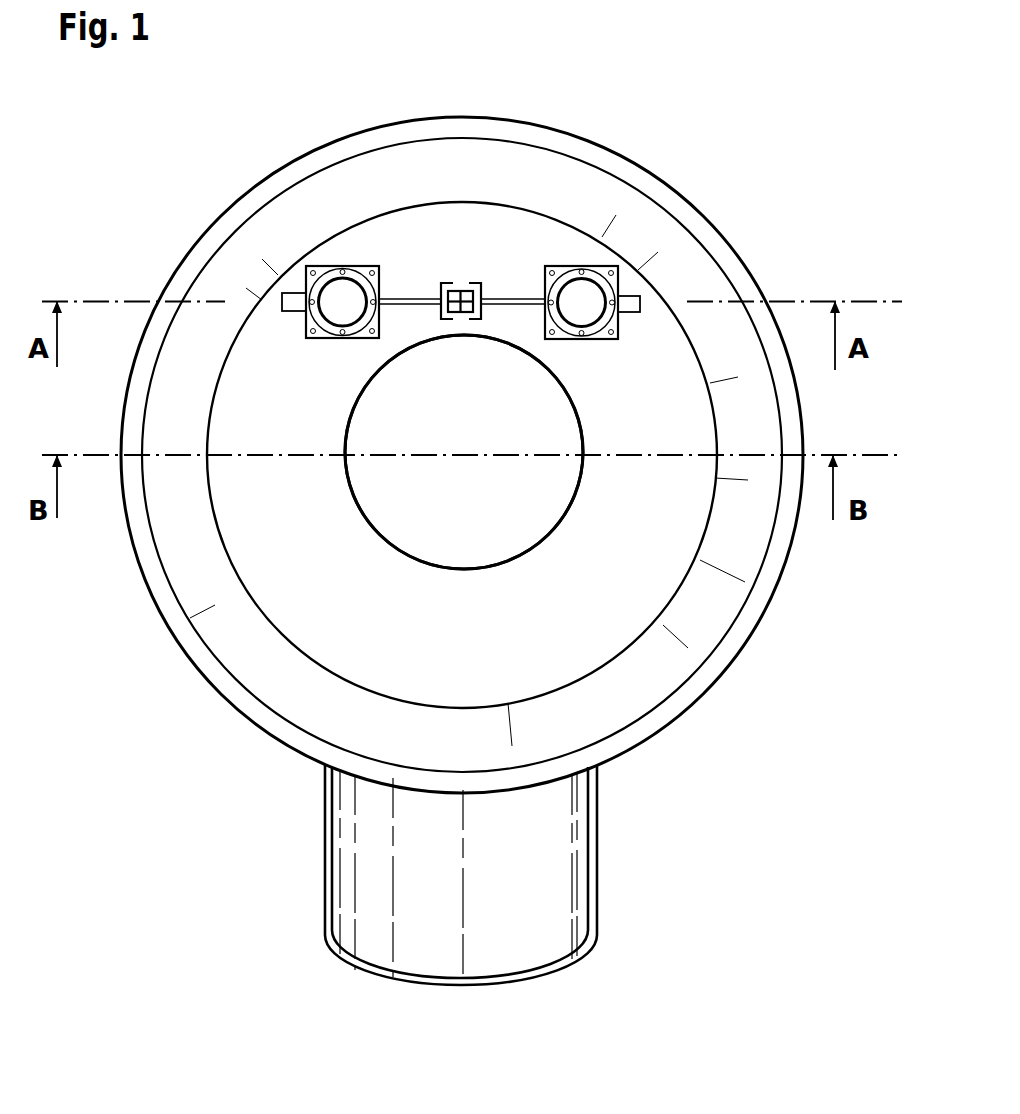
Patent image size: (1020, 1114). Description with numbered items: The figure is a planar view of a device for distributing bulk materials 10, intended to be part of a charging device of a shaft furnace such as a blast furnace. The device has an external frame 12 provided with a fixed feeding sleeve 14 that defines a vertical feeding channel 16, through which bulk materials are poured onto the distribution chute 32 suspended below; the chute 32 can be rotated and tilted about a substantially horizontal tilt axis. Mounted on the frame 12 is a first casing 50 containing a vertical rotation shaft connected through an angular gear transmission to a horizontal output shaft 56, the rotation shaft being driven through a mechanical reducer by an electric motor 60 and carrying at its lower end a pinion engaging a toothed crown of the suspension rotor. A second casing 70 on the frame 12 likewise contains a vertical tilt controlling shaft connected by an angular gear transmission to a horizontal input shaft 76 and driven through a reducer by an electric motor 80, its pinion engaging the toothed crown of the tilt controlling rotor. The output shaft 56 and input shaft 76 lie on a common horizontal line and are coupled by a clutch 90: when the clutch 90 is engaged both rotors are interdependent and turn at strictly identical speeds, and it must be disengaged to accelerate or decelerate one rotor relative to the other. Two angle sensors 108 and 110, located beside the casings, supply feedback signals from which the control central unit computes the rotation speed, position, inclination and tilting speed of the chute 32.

The device for distributing bulk materials 10 is at (718, 147).
The external frame 12 is at (658, 652).
The fixed feeding sleeve 14 is at (402, 547).
The vertical feeding channel 16 is at (540, 489).
The distribution chute 32 is at (533, 884).
The first casing 50 is at (289, 263).
The horizontal output shaft 56 is at (418, 298).
The electric motor 60 is at (338, 310).
The second casing 70 is at (629, 252).
The horizontal input shaft 76 is at (520, 298).
The electric motor 80 is at (580, 310).
The clutch 90 is at (472, 270).
The angle sensor 108 is at (292, 312).
The angle sensor 110 is at (626, 312).